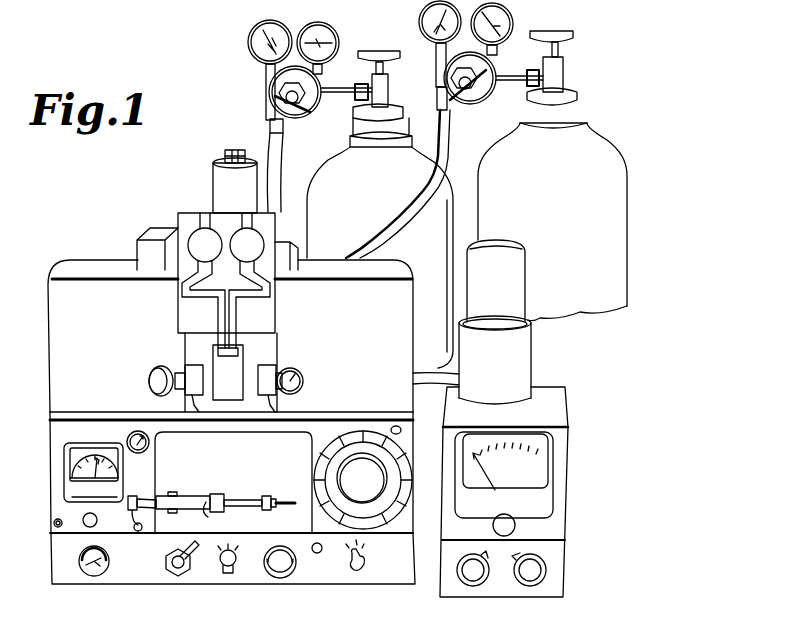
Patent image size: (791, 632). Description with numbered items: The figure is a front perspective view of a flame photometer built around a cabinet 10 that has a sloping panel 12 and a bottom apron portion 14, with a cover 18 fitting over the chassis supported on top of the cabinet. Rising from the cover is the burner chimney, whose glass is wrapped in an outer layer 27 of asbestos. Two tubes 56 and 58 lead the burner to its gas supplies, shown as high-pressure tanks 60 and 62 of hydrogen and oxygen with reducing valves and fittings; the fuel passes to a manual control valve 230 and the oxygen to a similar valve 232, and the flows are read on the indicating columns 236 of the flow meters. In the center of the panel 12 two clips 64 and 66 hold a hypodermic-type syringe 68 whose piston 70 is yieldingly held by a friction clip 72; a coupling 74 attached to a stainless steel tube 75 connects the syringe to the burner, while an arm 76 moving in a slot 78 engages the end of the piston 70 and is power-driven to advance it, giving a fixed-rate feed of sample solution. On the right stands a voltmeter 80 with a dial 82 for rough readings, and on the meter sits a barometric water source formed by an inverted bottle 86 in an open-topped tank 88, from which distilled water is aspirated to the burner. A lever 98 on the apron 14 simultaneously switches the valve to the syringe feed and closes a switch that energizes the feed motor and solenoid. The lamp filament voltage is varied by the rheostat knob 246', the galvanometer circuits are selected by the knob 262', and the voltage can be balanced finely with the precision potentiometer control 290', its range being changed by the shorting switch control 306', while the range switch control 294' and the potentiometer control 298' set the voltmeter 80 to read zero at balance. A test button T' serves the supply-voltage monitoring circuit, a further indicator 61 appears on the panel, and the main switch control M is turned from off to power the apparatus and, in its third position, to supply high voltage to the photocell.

The cabinet 10 is at (54, 413).
The sloping panel 12 is at (65, 436).
The bottom apron portion 14 is at (54, 562).
The cover 18 is at (55, 316).
The outer layer of asbestos 27 is at (222, 190).
The tube 56 is at (272, 137).
The tube 58 is at (411, 198).
The high-pressure tank 60 is at (338, 163).
The high-pressure tank 62 is at (608, 155).
The clip 64 is at (173, 492).
The clip 66 is at (216, 494).
The syringe 68 is at (190, 506).
The piston 70 is at (243, 499).
The friction clip 72 is at (220, 510).
The coupling 74 is at (131, 509).
The tube 75 is at (135, 526).
The arm 76 is at (266, 495).
The slot 78 is at (288, 500).
The voltmeter 80 is at (526, 509).
The dial 82 is at (545, 471).
The bottle 86 is at (518, 265).
The open-topped tank 88 is at (523, 351).
The lever 98 is at (198, 548).
The manual control valve 230 is at (185, 370).
The valve 232 is at (270, 362).
The indicating columns 236 is at (221, 317).
The knob 246' is at (296, 585).
The knob 262' is at (245, 581).
The potentiometer control 290' is at (374, 522).
The range switch control 294' is at (541, 592).
The potentiometer control 298' is at (479, 591).
The shorting switch control 306' is at (388, 400).
The indicator 61 is at (85, 523).
The test button T' is at (34, 514).
The main switch control M is at (357, 572).